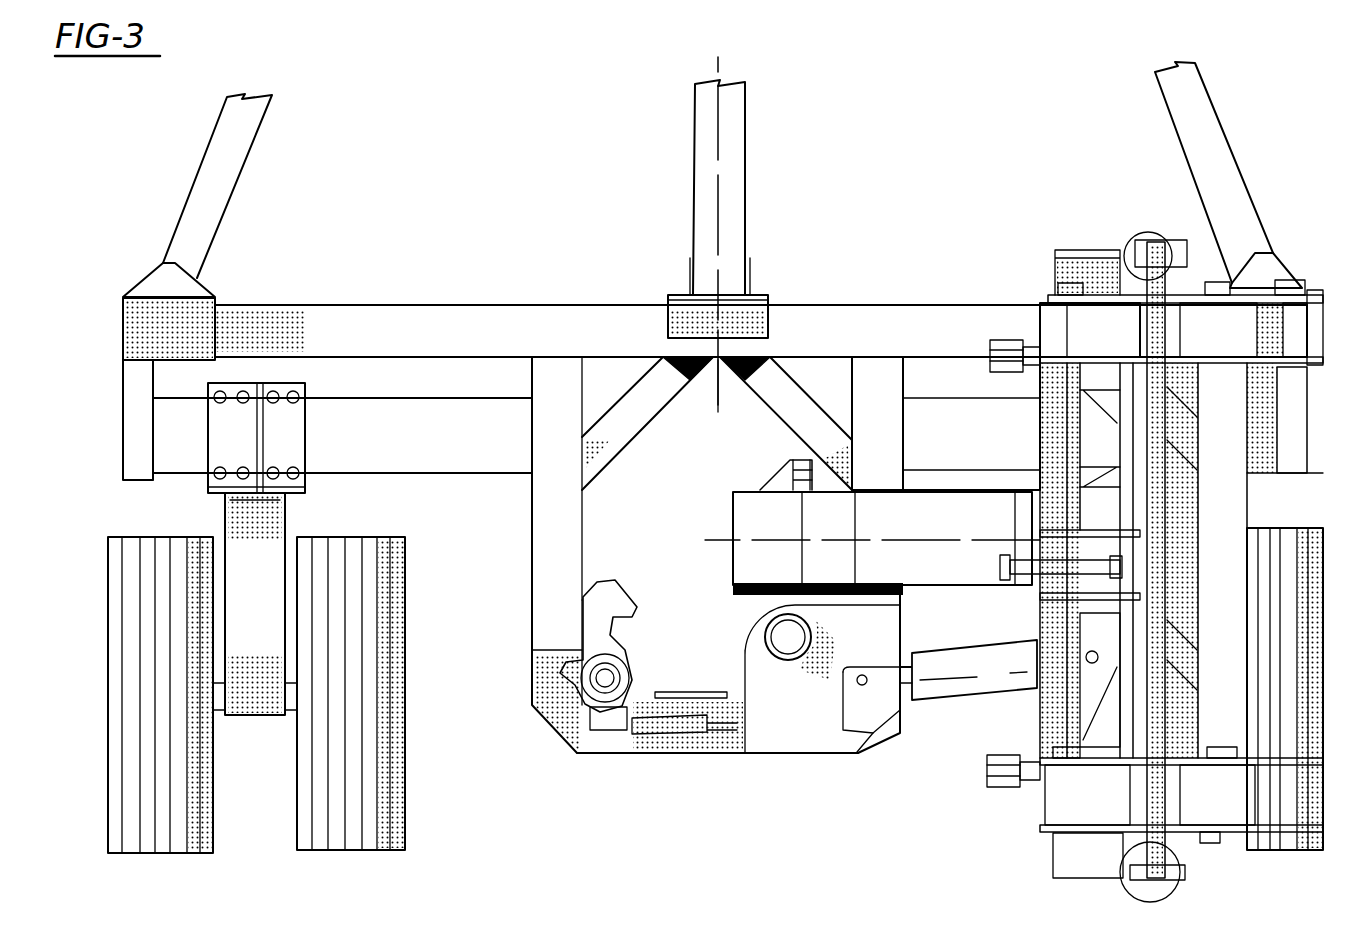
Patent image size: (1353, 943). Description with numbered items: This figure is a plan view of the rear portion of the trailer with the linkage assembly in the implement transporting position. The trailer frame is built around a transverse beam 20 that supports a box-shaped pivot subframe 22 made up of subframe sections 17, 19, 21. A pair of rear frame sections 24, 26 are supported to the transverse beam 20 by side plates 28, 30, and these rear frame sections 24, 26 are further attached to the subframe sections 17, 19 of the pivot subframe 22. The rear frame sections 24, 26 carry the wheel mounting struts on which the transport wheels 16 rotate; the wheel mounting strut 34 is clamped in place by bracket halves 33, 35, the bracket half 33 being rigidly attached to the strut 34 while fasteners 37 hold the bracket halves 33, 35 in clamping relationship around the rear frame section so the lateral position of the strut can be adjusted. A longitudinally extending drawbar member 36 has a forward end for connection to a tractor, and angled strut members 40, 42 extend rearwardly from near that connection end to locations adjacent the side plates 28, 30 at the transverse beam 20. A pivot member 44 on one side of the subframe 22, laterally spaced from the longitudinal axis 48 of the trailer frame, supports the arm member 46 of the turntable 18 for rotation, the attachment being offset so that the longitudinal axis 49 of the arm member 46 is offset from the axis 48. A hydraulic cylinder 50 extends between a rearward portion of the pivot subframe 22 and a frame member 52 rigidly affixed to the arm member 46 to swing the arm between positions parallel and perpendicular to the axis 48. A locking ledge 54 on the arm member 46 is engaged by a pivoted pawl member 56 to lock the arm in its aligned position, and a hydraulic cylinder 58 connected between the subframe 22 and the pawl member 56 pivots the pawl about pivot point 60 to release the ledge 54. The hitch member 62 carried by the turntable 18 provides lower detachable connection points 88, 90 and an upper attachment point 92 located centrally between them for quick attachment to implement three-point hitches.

The transport wheels 16 is at (300, 805).
The subframe section 17 is at (870, 430).
The turntable 18 is at (760, 477).
The subframe section 19 is at (552, 515).
The transverse beam 20 is at (348, 318).
The subframe section 21 is at (700, 755).
The pivot subframe 22 is at (528, 548).
The rear frame section 24 is at (935, 418).
The rear frame section 26 is at (178, 455).
The side plate 28 is at (1300, 415).
The side plate 30 is at (128, 385).
The bracket half 33 is at (227, 493).
The wheel mounting strut 34 is at (262, 555).
The bracket half 35 is at (224, 440).
The drawbar member 36 is at (737, 185).
The fasteners 37 is at (235, 395).
The angled strut member 40 is at (1210, 180).
The angled strut member 42 is at (222, 188).
The pivot member 44 is at (790, 637).
The arm member 46 is at (925, 550).
The longitudinal axis 48 is at (712, 208).
The longitudinal axis 49 is at (752, 535).
The hydraulic cylinder 50 is at (923, 700).
The frame member 52 is at (1085, 688).
The locking ledge 54 is at (800, 460).
The pawl member 56 is at (583, 567).
The hydraulic cylinder 58 is at (672, 712).
The pivot point 60 is at (610, 676).
The hitch member 62 is at (1038, 480).
The lower detachable connection point 88 is at (995, 335).
The lower detachable connection point 90 is at (1000, 788).
The upper detachable attachment point 92 is at (1003, 588).